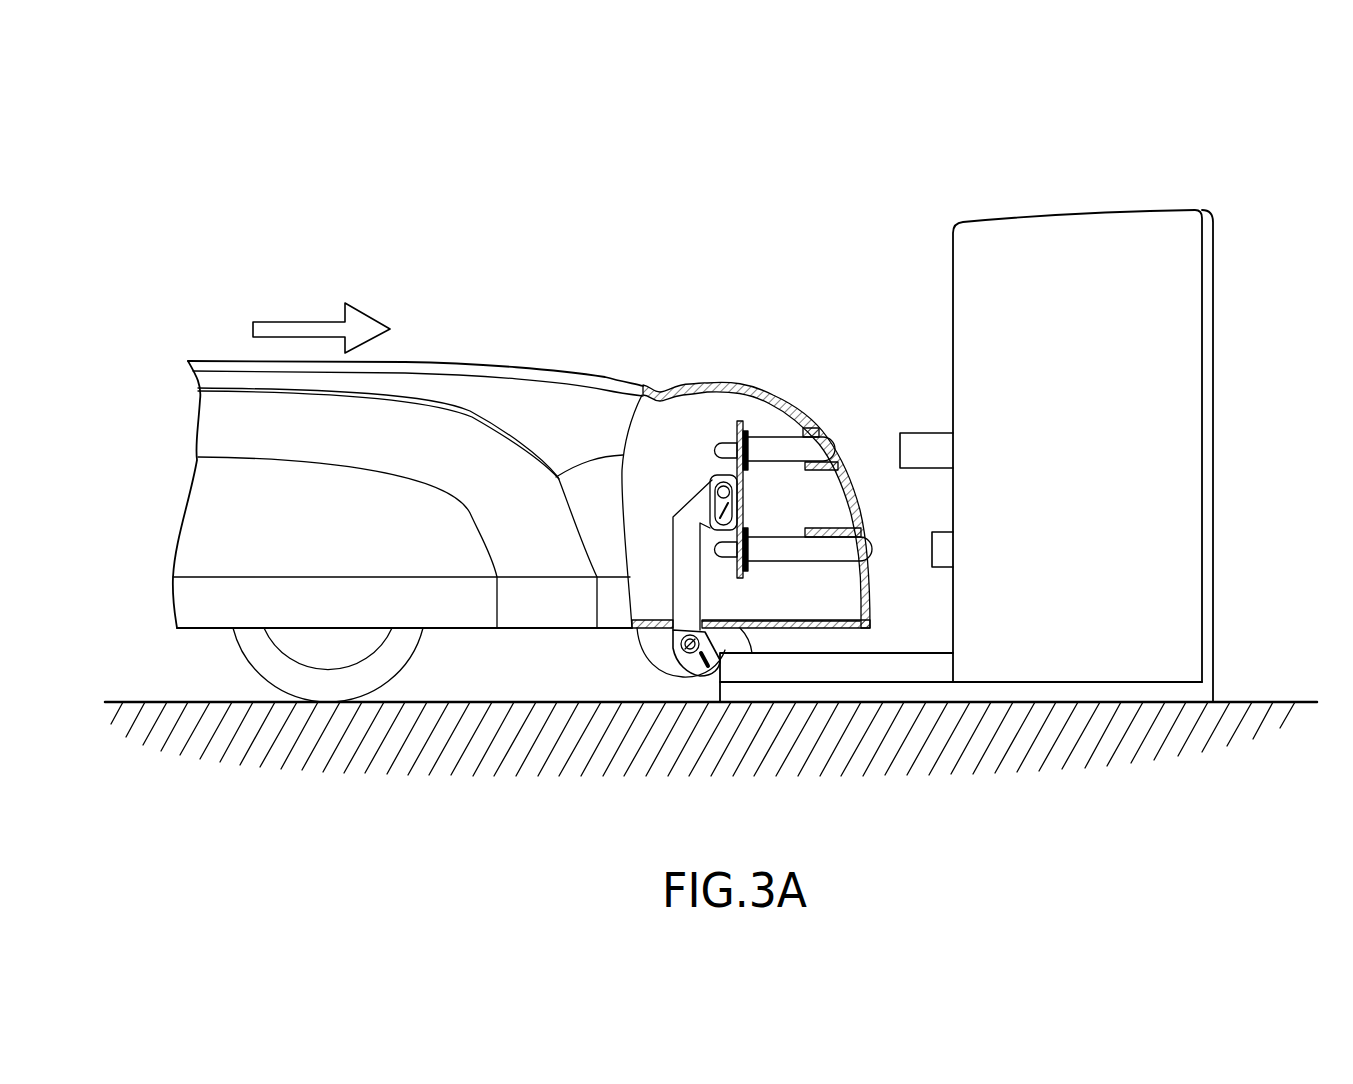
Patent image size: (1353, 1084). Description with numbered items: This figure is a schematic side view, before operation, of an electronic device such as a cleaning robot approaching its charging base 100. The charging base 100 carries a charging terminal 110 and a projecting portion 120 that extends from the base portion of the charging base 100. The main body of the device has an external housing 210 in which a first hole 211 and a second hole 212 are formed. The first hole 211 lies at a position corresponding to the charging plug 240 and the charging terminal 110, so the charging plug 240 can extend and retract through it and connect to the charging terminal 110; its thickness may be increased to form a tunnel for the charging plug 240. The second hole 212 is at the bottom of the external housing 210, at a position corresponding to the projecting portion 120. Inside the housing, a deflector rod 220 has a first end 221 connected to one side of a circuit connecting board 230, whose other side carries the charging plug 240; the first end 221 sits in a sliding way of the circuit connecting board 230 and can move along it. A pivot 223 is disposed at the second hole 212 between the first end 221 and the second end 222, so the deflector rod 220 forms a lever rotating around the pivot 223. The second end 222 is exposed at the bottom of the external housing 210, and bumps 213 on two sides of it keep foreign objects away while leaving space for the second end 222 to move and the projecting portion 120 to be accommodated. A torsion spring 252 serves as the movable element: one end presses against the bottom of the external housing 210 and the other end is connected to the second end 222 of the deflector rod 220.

The charging base 100 is at (1152, 206).
The charging terminal 110 is at (932, 545).
The projecting portion 120 is at (873, 668).
The external housing 210 is at (232, 361).
The first hole 211 is at (833, 460).
The second hole 212 is at (710, 620).
The bumps 213 is at (652, 653).
The deflector rod 220 is at (677, 569).
The first end 221 is at (707, 500).
The second end 222 is at (707, 668).
The pivot 223 is at (683, 658).
The circuit connecting board 230 is at (735, 433).
The charging plug 240 is at (790, 440).
The torsion spring 252 is at (683, 660).